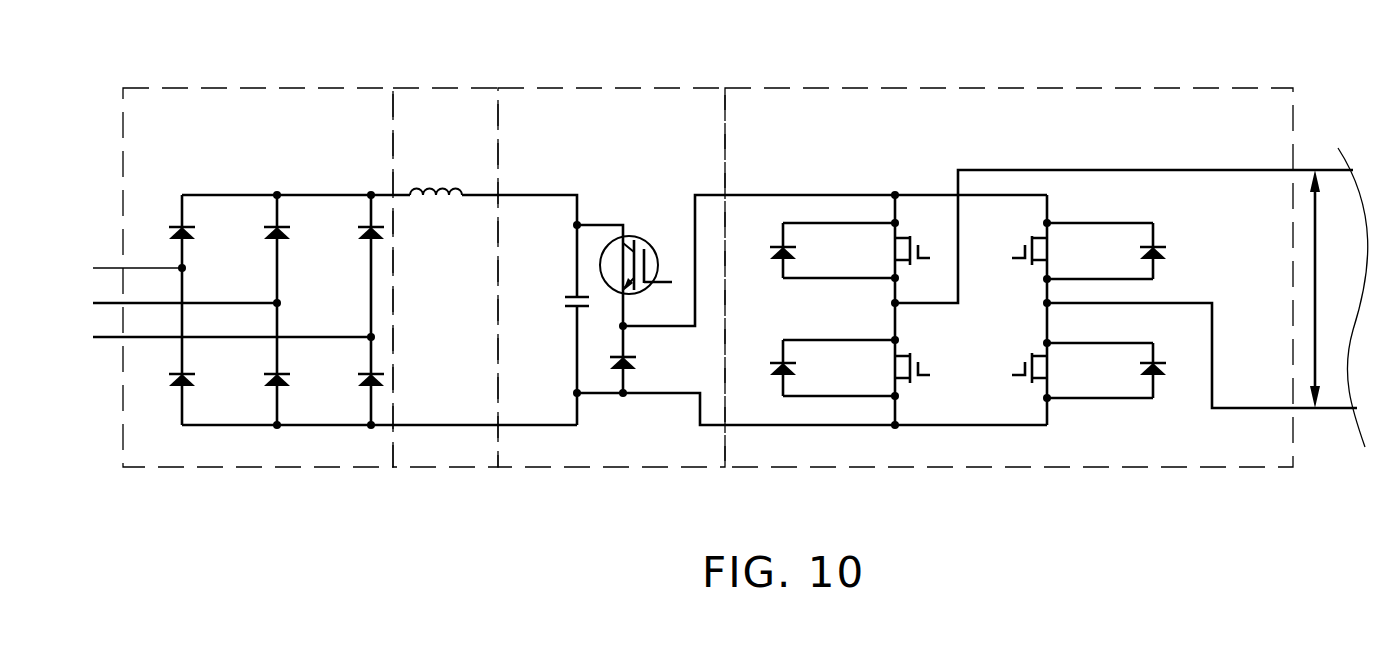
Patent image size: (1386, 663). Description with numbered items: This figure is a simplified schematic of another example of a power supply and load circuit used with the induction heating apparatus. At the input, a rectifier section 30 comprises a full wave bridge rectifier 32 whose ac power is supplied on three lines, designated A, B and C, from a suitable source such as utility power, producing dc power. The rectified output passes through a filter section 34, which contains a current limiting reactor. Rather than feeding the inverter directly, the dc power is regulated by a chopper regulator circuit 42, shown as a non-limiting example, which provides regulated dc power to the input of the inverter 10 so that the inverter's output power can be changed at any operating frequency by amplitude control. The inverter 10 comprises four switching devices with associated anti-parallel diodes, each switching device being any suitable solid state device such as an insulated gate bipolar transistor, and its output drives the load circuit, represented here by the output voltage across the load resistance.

The rectifier section 30 is at (293, 88).
The full wave bridge rectifier 32 is at (168, 175).
The filter section 34 is at (430, 88).
The chopper regulator circuit 42 is at (688, 88).
The inverter 10 is at (1060, 88).